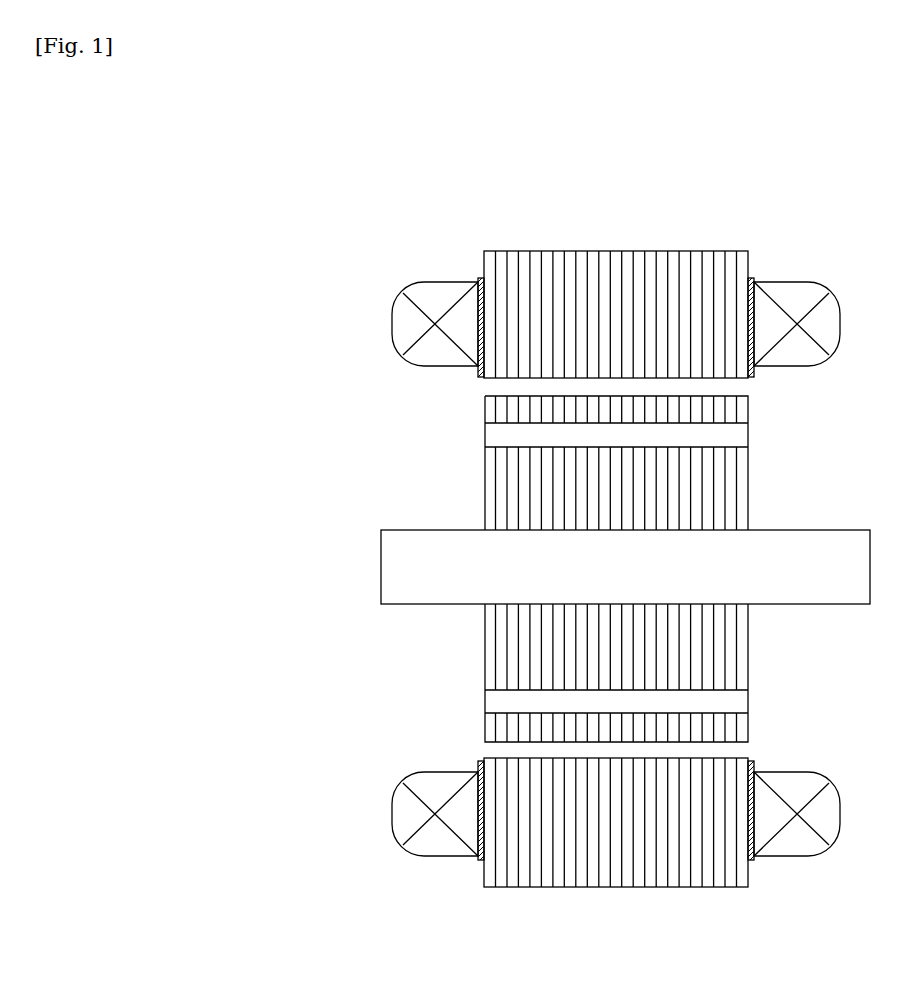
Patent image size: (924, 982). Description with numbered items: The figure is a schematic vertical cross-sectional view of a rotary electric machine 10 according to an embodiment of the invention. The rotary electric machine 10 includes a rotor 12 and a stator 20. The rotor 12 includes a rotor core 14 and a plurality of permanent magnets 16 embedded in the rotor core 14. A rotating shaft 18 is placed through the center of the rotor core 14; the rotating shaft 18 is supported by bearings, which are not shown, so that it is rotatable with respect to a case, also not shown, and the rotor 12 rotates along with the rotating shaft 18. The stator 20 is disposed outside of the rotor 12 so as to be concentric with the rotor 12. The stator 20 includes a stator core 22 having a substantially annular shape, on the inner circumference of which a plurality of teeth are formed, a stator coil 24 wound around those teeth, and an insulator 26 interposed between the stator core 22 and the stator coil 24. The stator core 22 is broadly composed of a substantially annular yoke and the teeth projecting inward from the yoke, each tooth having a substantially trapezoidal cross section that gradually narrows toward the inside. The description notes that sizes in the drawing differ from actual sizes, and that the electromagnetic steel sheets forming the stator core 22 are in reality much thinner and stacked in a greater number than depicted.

The rotary electric machine 10 is at (433, 160).
The rotor 12 is at (846, 440).
The rotor core 14 is at (748, 489).
The permanent magnets 16 is at (748, 440).
The rotating shaft 18 is at (432, 533).
The stator 20 is at (718, 216).
The stator core 22 is at (625, 260).
The stator coil 24 is at (808, 293).
The insulator 26 is at (755, 330).